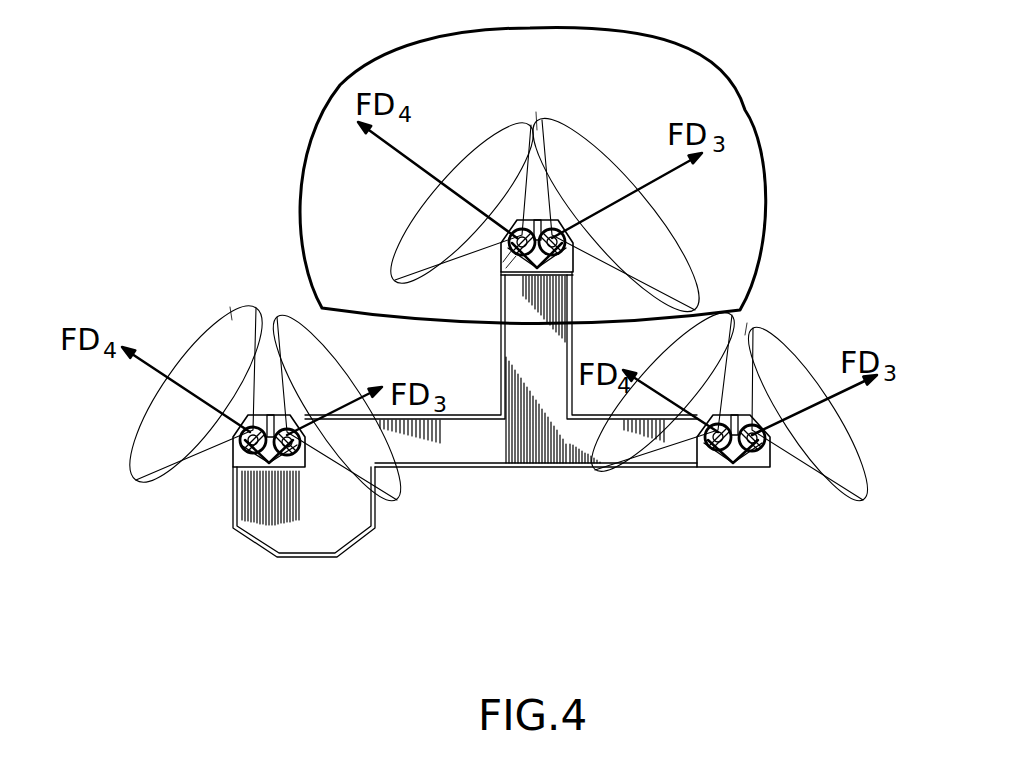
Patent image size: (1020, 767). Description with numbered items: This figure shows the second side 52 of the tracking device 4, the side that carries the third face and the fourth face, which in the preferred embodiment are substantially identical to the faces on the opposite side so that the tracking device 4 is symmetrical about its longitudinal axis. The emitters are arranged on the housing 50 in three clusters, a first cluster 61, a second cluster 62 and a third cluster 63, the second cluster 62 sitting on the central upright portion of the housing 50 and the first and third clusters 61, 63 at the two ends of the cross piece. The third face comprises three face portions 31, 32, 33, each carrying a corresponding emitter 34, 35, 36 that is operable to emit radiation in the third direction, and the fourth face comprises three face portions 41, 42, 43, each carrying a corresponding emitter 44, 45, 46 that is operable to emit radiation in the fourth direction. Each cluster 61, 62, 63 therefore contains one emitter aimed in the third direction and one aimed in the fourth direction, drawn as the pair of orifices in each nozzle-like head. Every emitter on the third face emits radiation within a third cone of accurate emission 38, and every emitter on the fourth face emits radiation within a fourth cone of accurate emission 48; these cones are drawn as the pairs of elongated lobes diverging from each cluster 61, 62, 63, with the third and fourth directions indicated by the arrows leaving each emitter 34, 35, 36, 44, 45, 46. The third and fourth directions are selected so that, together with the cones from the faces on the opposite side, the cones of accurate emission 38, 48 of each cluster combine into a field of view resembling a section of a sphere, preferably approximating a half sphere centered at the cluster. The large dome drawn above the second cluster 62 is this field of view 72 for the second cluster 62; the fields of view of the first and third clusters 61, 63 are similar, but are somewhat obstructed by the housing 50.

The tracking device 4 is at (477, 465).
The face portion 31 is at (749, 483).
The face portion 32 is at (539, 267).
The face portion 33 is at (267, 509).
The emitter 34 is at (770, 450).
The emitter 35 is at (567, 250).
The emitter 36 is at (305, 455).
The third cone of accurate emission 38 is at (572, 122).
The face portion 41 is at (705, 470).
The face portion 42 is at (506, 246).
The face portion 43 is at (262, 472).
The emitter 44 is at (716, 468).
The emitter 45 is at (520, 276).
The emitter 46 is at (243, 452).
The fourth cone of accurate emission 48 is at (486, 138).
The housing 50 is at (506, 488).
The second side 52 is at (569, 455).
The first cluster 61 is at (752, 314).
The second cluster 62 is at (538, 104).
The third cluster 63 is at (228, 300).
The field of view 72 is at (749, 64).